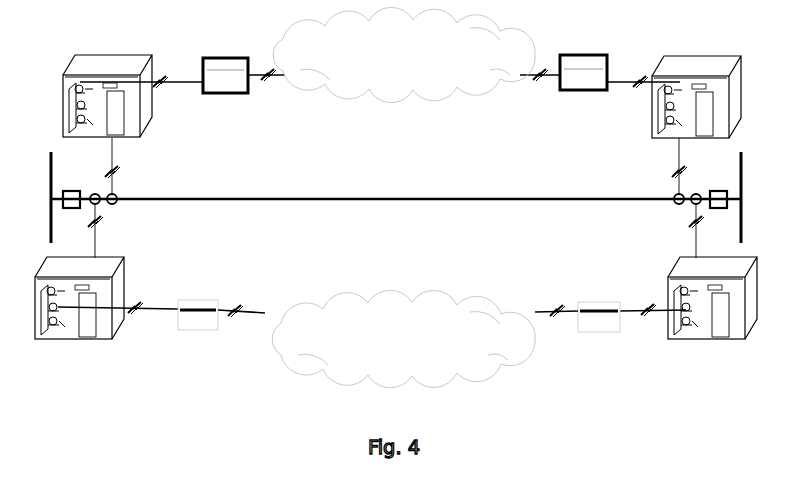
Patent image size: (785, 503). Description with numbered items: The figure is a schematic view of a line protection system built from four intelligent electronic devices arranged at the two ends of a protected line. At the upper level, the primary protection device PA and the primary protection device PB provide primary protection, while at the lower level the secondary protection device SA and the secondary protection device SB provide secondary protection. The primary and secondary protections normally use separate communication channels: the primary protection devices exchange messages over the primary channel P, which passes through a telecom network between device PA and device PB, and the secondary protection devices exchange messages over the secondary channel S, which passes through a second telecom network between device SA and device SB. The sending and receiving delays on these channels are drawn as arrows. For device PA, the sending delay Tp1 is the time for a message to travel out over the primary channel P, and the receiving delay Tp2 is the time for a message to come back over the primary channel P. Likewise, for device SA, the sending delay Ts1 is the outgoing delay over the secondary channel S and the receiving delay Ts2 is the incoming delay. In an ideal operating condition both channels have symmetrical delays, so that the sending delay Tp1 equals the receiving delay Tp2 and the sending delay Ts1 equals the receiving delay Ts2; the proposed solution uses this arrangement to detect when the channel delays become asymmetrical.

The IED PA is at (107, 82).
The IED PB is at (696, 82).
The IED SA is at (79, 313).
The IED SB is at (712, 313).
The sending delay via primary channel Tp1 is at (280, 127).
The receiving delay via primary channel Tp2 is at (628, 127).
The sending delay via secondary channel Ts1 is at (245, 348).
The receiving delay via secondary channel Ts2 is at (642, 347).
The primary channel P is at (404, 69).
The secondary channel S is at (377, 316).